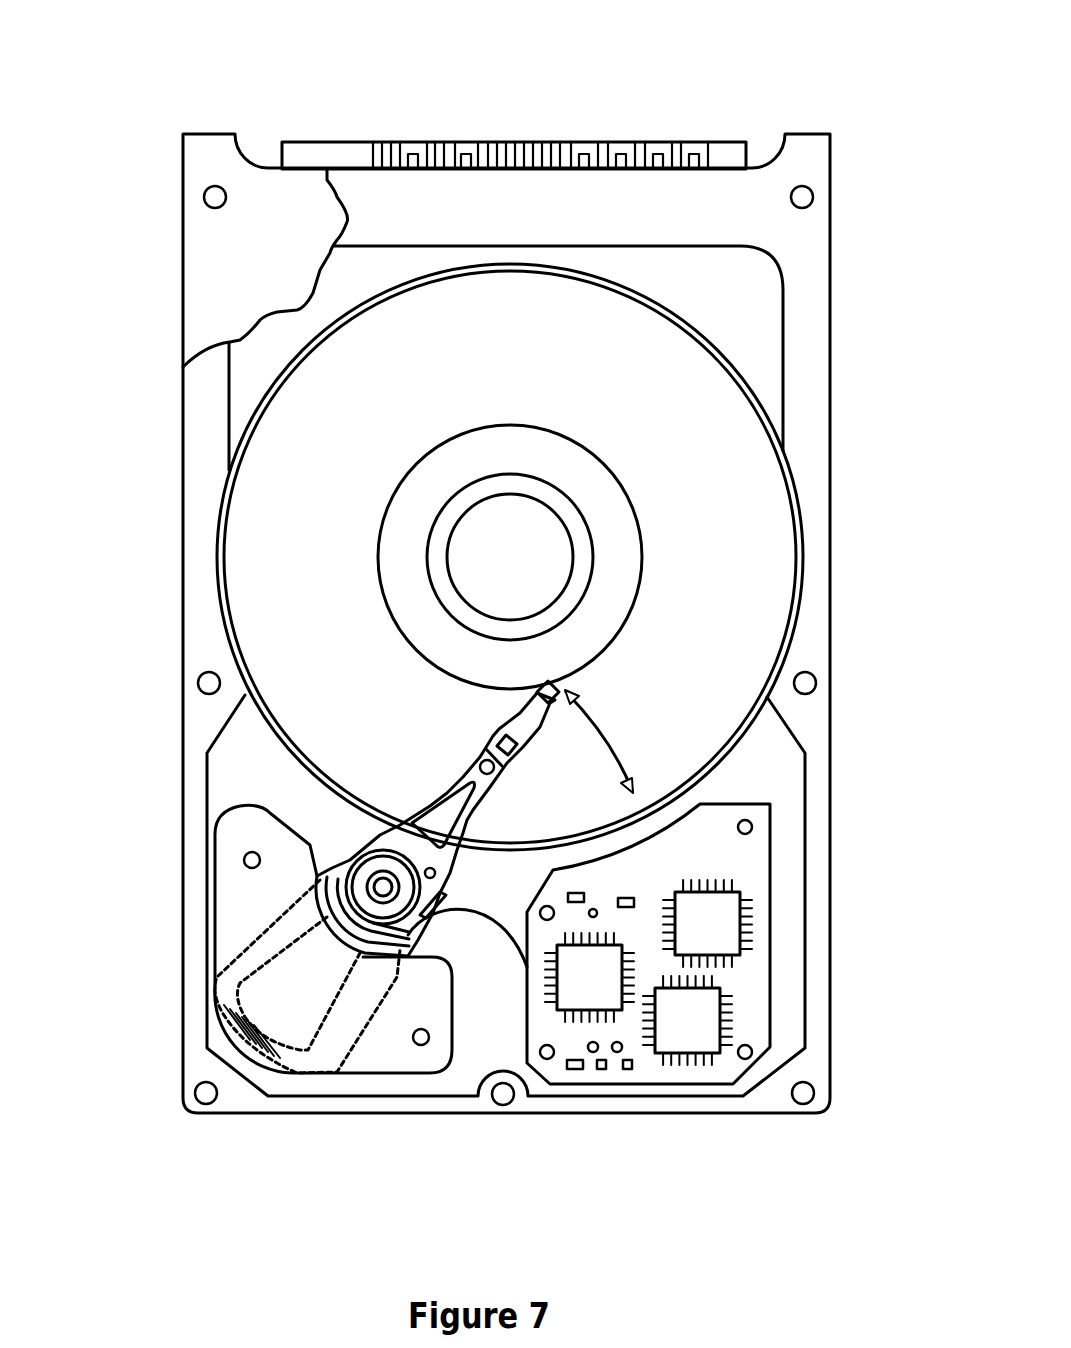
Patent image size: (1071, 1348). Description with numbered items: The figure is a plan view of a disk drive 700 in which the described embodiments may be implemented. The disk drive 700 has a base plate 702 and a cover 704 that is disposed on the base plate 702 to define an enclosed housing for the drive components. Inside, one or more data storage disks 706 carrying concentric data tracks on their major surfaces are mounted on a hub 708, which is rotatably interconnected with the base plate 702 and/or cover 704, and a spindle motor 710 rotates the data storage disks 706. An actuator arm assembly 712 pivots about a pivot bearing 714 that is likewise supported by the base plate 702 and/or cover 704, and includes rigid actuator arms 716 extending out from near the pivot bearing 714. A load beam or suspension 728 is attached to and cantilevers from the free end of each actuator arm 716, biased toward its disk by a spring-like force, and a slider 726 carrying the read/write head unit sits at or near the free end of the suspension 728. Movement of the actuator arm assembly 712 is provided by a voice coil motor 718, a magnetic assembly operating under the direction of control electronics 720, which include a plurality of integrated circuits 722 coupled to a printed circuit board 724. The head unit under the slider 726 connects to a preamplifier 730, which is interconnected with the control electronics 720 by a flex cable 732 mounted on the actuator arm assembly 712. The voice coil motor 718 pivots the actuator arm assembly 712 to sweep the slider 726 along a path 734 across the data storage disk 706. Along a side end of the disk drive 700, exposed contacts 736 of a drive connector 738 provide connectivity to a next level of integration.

The disk drive 700 is at (183, 46).
The base plate 702 is at (207, 635).
The cover 704 is at (255, 261).
The data storage disk 706 is at (348, 438).
The hub 708 is at (387, 510).
The spindle motor 710 is at (478, 577).
The actuator arm assembly 712 is at (463, 860).
The pivot bearing 714 is at (358, 887).
The actuator arm 716 is at (390, 843).
The voice coil motor 718 is at (205, 986).
The control electronics 720 is at (772, 1124).
The integrated circuit 722 is at (713, 918).
The printed circuit board 724 is at (743, 987).
The slider 726 is at (557, 683).
The suspension 728 is at (512, 728).
The preamplifier 730 is at (440, 918).
The flex cable 732 is at (430, 900).
The path 734 is at (612, 735).
The exposed contacts 736 is at (703, 143).
The drive connector 738 is at (288, 152).